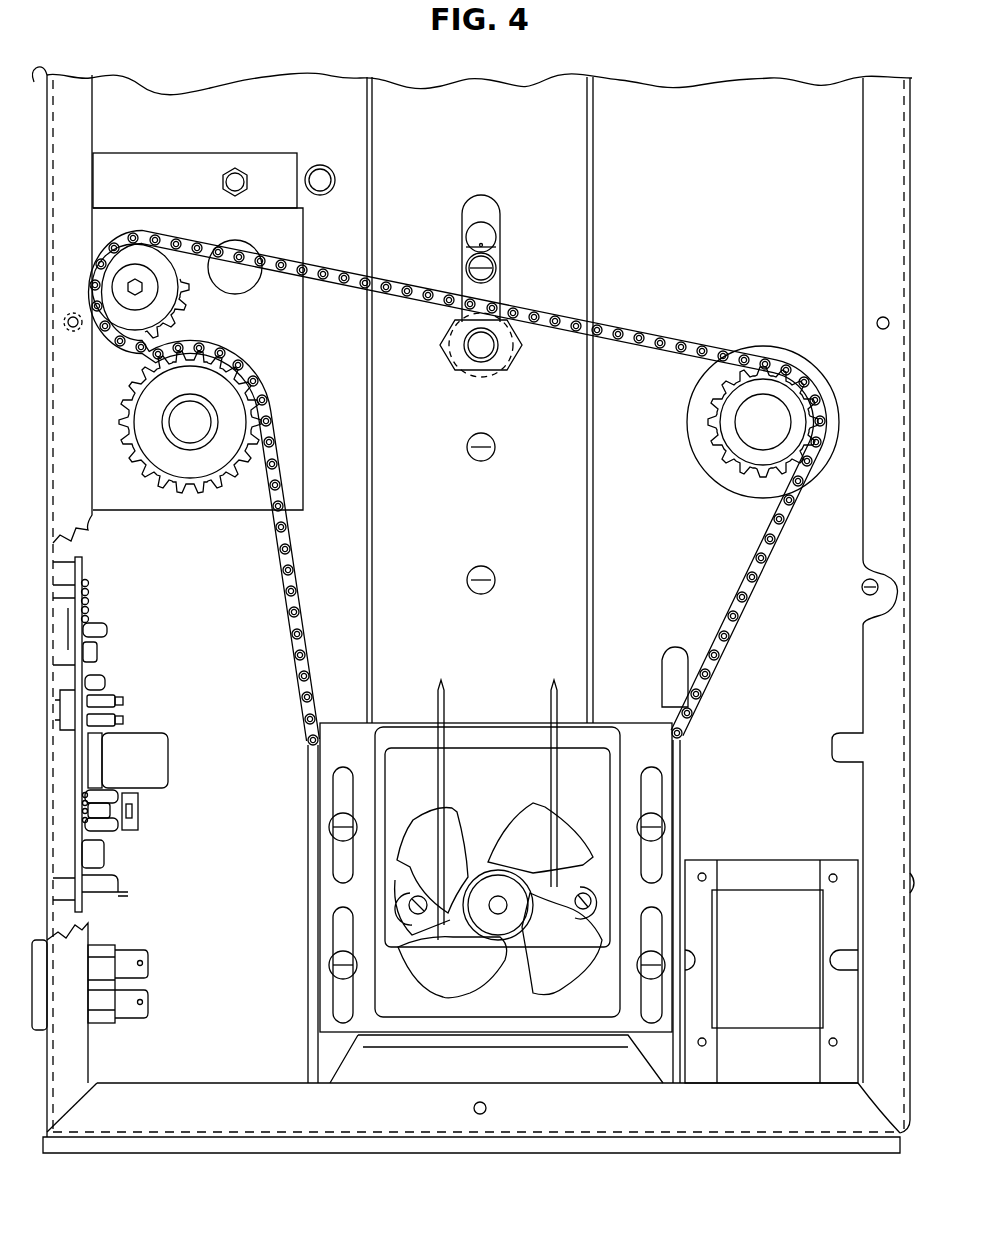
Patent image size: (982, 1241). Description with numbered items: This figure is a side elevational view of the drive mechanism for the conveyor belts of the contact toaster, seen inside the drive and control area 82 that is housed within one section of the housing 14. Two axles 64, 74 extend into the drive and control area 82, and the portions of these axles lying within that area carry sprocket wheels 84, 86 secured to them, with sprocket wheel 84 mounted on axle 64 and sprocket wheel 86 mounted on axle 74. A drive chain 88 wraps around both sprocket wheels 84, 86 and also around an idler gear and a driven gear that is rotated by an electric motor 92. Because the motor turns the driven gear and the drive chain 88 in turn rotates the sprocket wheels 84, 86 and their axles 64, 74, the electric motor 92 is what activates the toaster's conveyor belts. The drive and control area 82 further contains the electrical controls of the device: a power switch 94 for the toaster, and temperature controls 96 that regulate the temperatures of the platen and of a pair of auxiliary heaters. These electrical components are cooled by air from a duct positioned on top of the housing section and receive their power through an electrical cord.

The housing 14 is at (46, 78).
The drive and control area 82 is at (743, 94).
The drive chain 88 is at (137, 247).
The sprocket wheel 84 is at (193, 494).
The axle 64 is at (188, 446).
The axle 74 is at (746, 428).
The sprocket wheel 86 is at (750, 479).
The electric motor 92 is at (522, 1027).
The power switch 94 is at (115, 1025).
The temperature controls 96 is at (160, 782).